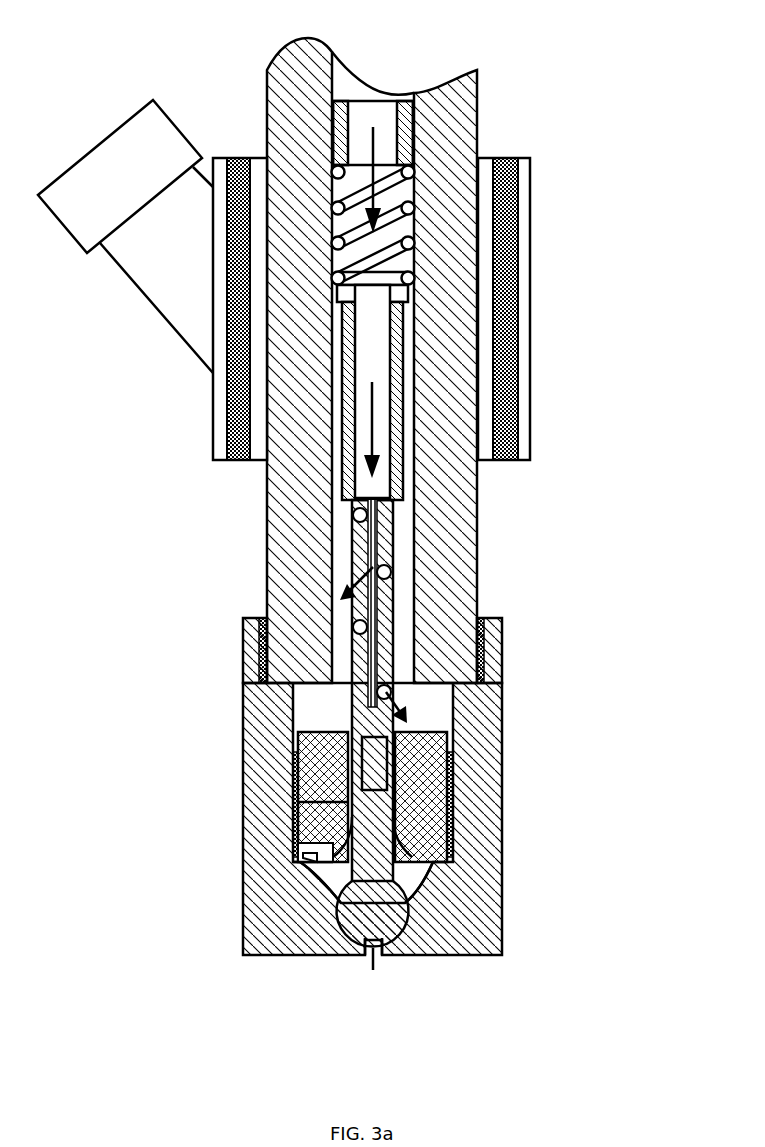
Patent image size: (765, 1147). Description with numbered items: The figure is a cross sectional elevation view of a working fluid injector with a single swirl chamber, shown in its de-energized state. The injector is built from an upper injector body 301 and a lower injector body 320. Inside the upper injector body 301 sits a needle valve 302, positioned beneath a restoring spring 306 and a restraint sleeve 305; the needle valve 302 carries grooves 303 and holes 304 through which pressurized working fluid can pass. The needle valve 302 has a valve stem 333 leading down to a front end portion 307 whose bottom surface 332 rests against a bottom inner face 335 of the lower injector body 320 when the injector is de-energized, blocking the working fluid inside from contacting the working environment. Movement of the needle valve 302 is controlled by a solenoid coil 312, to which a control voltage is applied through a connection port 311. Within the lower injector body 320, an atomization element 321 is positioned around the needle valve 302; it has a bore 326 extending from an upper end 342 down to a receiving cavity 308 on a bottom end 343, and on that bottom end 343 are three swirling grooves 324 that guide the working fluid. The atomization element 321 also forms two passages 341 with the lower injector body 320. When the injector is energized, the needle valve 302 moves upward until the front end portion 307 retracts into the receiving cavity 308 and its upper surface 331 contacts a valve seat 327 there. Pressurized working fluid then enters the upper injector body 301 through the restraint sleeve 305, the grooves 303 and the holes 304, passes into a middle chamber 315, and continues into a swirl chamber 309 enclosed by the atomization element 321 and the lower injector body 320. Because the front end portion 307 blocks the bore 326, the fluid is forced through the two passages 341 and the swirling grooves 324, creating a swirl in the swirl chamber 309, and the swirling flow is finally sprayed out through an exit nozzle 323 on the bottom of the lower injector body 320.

The upper injector body 301 is at (462, 537).
The needle valve 302 is at (343, 490).
The grooves 303 is at (376, 692).
The holes 304 is at (352, 625).
The restraint sleeve 305 is at (340, 101).
The restoring spring 306 is at (415, 172).
The front end portion 307 is at (353, 927).
The receiving cavity 308 is at (343, 849).
The swirl chamber 309 is at (330, 900).
The connection port 311 is at (155, 137).
The solenoid coil 312 is at (228, 437).
The middle chamber 315 is at (328, 715).
The lower injector body 320 is at (503, 883).
The atomization element 321 is at (435, 785).
The exit nozzle 323 is at (375, 968).
The swirling grooves 324 is at (307, 863).
The bore 326 is at (298, 802).
The valve seat 327 is at (298, 842).
The upper surface 331 is at (400, 895).
The bottom surface 332 is at (383, 956).
The valve stem 333 is at (392, 752).
The bottom inner face 335 is at (410, 920).
The passages 341 is at (453, 825).
The upper end 342 is at (433, 727).
The bottom end 343 is at (440, 866).